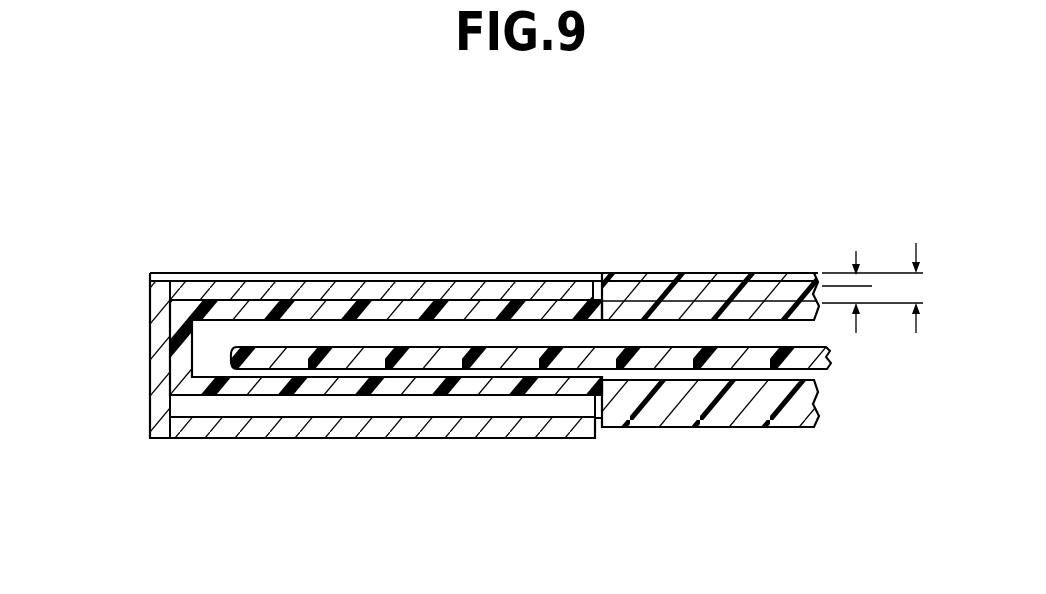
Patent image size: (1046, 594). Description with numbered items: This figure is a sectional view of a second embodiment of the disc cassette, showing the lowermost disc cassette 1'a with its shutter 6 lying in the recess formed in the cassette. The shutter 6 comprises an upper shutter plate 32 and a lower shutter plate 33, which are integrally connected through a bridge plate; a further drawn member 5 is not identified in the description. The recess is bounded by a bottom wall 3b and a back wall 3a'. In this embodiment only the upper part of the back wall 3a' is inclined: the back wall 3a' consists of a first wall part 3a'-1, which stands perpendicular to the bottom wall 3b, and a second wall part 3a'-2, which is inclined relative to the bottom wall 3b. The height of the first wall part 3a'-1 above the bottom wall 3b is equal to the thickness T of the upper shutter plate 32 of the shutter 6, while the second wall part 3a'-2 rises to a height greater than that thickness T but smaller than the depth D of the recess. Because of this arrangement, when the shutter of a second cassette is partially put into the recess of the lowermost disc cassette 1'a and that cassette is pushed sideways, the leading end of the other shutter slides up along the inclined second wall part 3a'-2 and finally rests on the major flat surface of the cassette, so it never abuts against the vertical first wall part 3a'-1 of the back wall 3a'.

The shutter 6 is at (443, 266).
The lowermost disc cassette 1'a is at (128, 373).
The upper shutter plate 32 is at (250, 290).
The lower shutter plate 33 is at (258, 428).
The bottom wall 3b is at (334, 305).
The central strip member 5 is at (731, 275).
The back wall 3a' is at (646, 349).
The first wall part 3a'-1 is at (542, 353).
The second wall part 3a'-2 is at (694, 353).
The thickness of the upper shutter plate T is at (858, 292).
The depth of the recess D is at (883, 288).